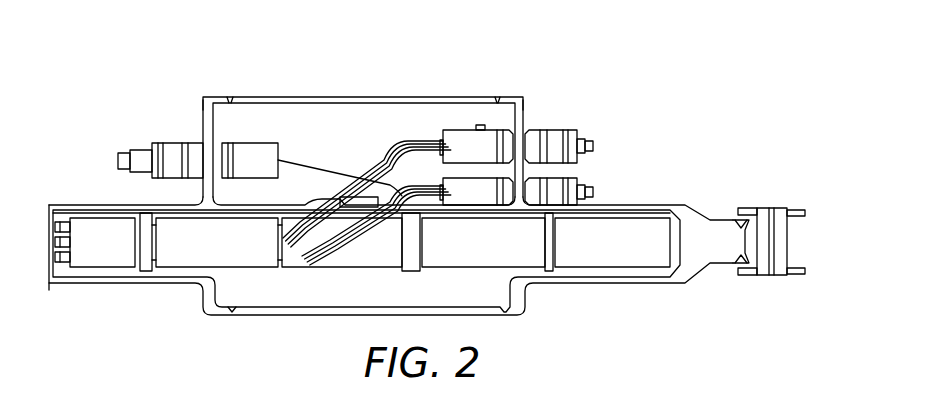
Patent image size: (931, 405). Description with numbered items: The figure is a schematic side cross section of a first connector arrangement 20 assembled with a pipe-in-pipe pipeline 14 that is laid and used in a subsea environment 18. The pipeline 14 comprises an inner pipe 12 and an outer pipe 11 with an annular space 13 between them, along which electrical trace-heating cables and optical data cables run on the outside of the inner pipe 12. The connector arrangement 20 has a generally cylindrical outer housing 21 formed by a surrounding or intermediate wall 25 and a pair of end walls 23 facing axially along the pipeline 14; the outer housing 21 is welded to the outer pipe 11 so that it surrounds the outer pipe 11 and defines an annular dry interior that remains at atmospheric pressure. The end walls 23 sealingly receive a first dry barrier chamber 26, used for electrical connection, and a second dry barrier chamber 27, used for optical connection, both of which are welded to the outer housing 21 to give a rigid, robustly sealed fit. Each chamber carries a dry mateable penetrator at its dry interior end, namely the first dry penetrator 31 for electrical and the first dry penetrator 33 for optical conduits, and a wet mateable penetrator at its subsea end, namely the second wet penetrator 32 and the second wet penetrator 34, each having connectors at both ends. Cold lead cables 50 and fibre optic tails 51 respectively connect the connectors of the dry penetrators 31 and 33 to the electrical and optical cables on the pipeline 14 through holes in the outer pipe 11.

The outer pipe 11 is at (62, 285).
The inner pipe 12 is at (100, 270).
The annular space 13 is at (132, 273).
The pipe-in-pipe (PIP) pipeline 14 is at (74, 203).
The subsea environment 18 is at (712, 333).
The first connector arrangement 20 is at (483, 43).
The outer housing 21 is at (525, 97).
The end walls 23 is at (201, 99).
The surrounding or intermediate wall 25 is at (333, 96).
The first dry barrier chamber 26 is at (586, 170).
The second dry barrier chamber 27 is at (172, 143).
The first dry mateable penetrator 31 is at (456, 130).
The second wet mateable penetrator 32 is at (595, 147).
The first dry mateable penetrator 33 is at (262, 152).
The second wet mateable penetrator 34 is at (135, 150).
The cold lead cables 50 is at (392, 152).
The fibre optic tails 51 is at (326, 170).